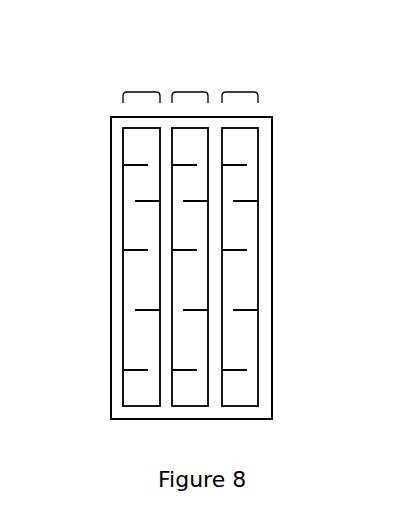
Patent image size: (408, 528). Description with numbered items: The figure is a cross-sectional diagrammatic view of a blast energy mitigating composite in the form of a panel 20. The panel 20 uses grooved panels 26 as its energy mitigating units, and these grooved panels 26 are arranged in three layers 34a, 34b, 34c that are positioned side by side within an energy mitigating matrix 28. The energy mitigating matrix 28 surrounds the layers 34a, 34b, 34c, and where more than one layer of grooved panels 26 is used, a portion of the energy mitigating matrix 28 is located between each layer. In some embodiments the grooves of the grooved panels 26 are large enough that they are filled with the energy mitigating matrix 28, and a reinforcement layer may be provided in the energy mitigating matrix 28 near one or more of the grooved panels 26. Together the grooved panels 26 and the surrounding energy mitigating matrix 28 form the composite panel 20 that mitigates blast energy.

The panel 20 is at (210, 226).
The grooved panels 26 is at (135, 216).
The energy mitigating matrix 28 is at (270, 228).
The layer of grooved panels 34a is at (137, 92).
The layer of grooved panels 34b is at (185, 92).
The layer of grooved panels 34c is at (245, 92).